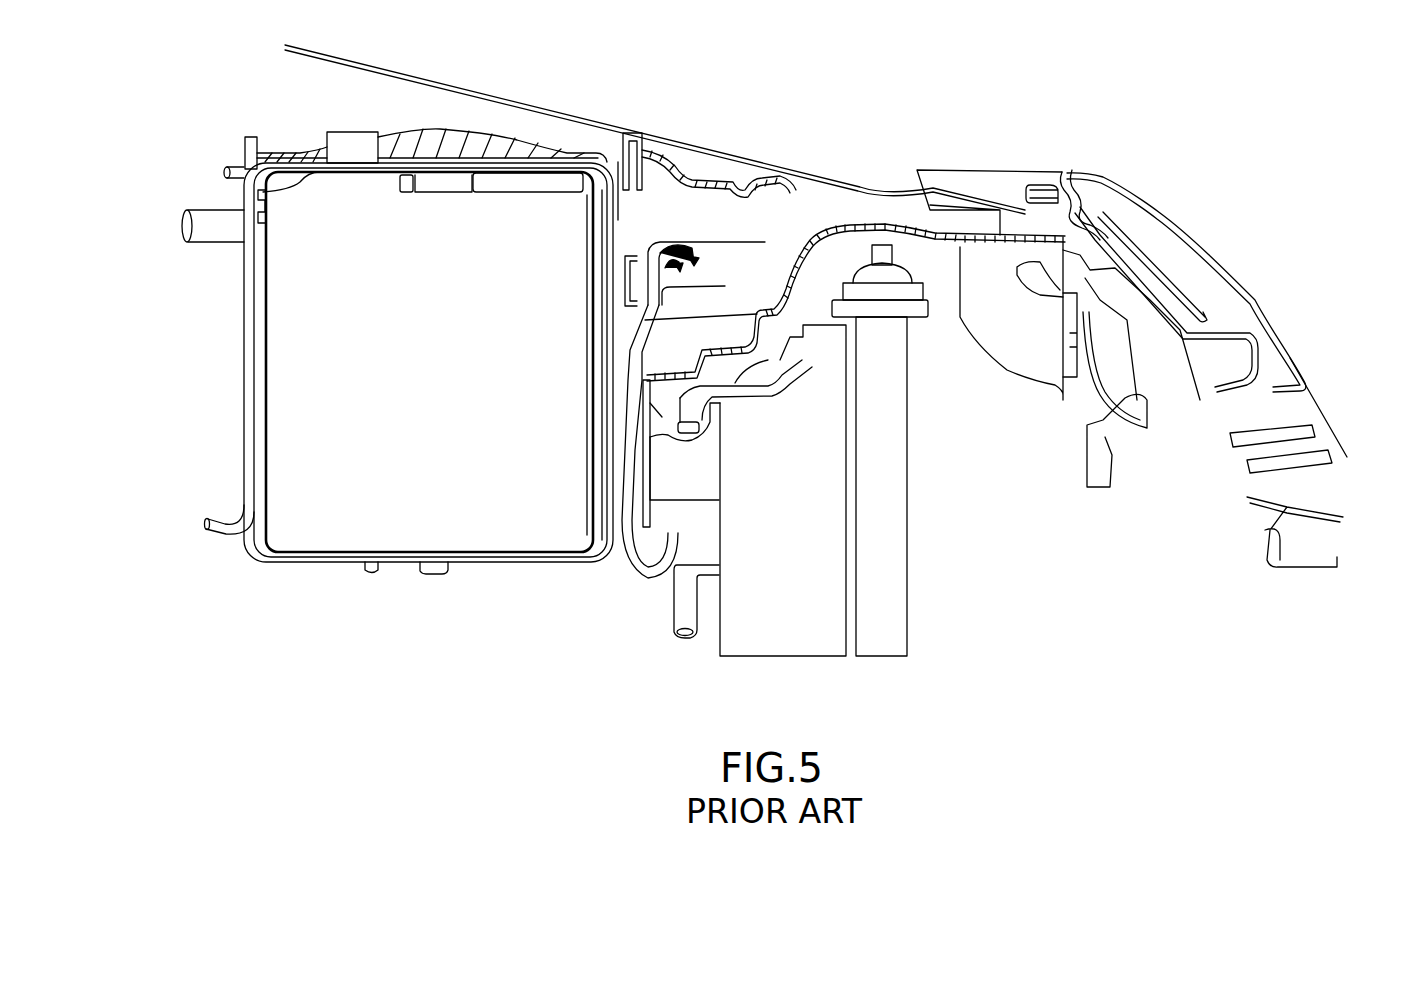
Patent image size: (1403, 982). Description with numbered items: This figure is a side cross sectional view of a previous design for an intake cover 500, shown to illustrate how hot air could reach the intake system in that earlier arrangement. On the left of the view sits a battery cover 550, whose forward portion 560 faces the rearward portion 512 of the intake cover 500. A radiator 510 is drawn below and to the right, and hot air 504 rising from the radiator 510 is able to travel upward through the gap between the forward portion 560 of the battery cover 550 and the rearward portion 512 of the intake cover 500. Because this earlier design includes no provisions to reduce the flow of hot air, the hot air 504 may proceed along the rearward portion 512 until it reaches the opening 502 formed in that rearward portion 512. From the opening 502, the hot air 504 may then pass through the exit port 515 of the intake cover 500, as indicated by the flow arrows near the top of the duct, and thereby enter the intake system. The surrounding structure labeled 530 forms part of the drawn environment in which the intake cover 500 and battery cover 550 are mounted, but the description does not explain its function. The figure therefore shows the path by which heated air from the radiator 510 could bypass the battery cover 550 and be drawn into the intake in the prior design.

The intake cover 500 is at (700, 172).
The opening 502 is at (655, 349).
The hot air 504 is at (643, 575).
The radiator 510 is at (805, 657).
The rearward portion 512 is at (727, 443).
The exit port 515 is at (723, 286).
The pillar structure 530 is at (1173, 184).
The battery cover 550 is at (188, 364).
The forward portion 560 is at (612, 310).